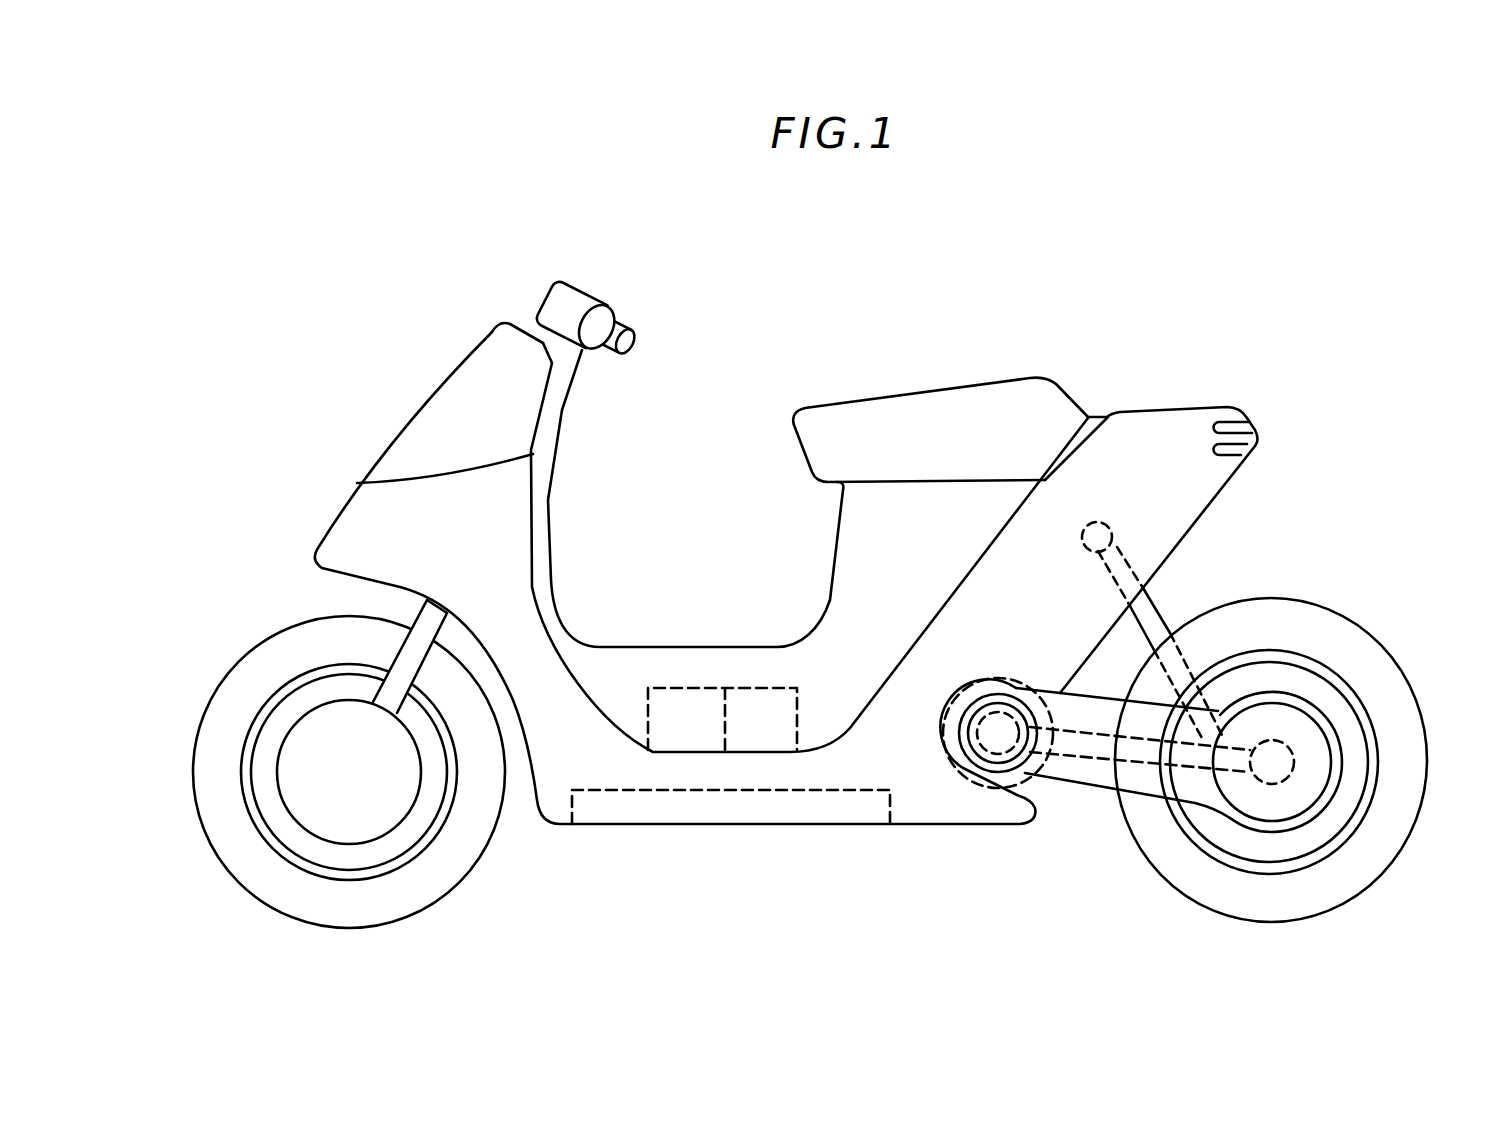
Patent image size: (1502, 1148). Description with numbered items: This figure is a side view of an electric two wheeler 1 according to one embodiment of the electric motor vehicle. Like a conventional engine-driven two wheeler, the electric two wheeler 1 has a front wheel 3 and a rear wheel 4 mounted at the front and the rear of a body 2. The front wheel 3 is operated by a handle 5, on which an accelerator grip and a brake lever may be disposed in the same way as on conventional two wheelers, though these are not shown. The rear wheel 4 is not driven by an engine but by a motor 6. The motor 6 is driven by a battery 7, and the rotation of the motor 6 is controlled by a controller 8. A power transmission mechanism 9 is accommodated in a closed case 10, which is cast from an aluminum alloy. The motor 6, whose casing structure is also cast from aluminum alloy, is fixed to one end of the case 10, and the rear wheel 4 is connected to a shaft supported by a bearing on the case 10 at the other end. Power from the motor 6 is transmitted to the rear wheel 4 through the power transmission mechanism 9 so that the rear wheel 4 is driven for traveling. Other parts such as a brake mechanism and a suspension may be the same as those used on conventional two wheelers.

The electric two wheeler 1 is at (1200, 277).
The body 2 is at (622, 643).
The front wheel 3 is at (225, 677).
The rear wheel 4 is at (1400, 688).
The handle 5 is at (603, 292).
The motor 6 is at (967, 780).
The battery 7 is at (697, 688).
The controller 8 is at (698, 803).
The power transmission mechanism 9 is at (1090, 760).
The case 10 is at (1140, 793).